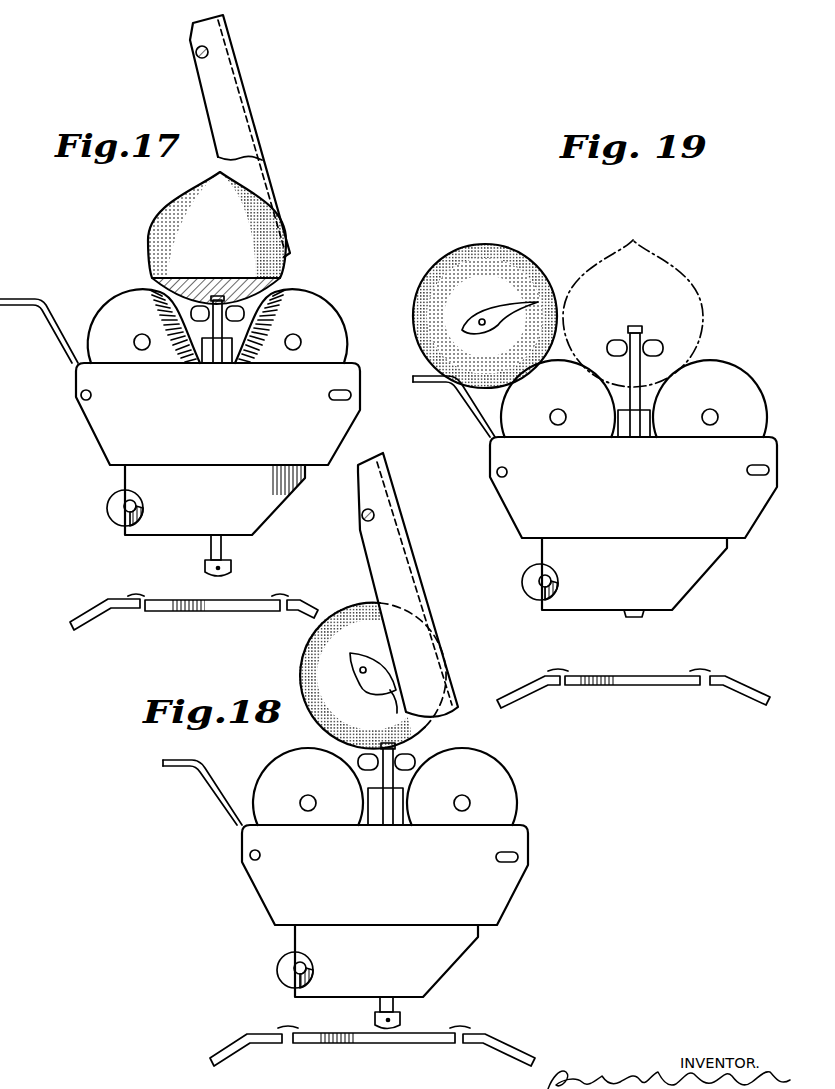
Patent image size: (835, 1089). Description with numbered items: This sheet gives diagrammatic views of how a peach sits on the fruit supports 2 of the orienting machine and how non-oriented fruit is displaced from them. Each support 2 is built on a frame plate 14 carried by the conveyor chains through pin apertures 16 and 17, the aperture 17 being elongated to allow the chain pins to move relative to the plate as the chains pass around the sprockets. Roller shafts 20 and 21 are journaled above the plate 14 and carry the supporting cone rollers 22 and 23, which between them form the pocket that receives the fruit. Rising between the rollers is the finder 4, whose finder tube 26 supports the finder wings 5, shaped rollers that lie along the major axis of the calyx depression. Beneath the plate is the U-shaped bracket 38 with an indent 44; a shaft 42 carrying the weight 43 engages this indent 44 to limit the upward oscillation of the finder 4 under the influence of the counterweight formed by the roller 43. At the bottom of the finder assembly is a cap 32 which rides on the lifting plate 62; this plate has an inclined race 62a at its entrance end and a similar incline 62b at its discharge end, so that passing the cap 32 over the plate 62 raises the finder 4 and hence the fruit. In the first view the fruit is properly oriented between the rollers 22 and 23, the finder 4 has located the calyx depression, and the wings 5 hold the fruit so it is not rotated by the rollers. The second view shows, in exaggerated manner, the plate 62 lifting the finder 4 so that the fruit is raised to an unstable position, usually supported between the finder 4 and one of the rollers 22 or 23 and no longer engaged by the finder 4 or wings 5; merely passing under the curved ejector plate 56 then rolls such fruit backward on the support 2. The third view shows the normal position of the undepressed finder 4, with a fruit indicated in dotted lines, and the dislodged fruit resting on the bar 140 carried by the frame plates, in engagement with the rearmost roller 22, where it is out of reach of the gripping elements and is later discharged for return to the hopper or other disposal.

In FIG. 17, the supports 2 is at (210, 413).
In FIG. 19, the supports 2 is at (624, 479).
In FIG. 18, the supports 2 is at (379, 879).
In FIG. 17, the finder 4 is at (283, 270).
In FIG. 19, the finder 4 is at (638, 325).
In FIG. 18, the finder 4 is at (400, 742).
In FIG. 17, the finder wings 5 is at (212, 298).
In FIG. 19, the finder wings 5 is at (656, 343).
In FIG. 18, the finder wings 5 is at (408, 760).
In FIG. 17, the fruit support frame plates 14 is at (90, 410).
In FIG. 19, the fruit support frame plates 14 is at (518, 500).
In FIG. 18, the fruit support frame plates 14 is at (498, 898).
In FIG. 17, the pin aperture 16 is at (91, 396).
In FIG. 19, the pin aperture 16 is at (508, 472).
In FIG. 18, the pin aperture 16 is at (250, 855).
In FIG. 17, the pin aperture 17 is at (335, 400).
In FIG. 19, the pin aperture 17 is at (752, 468).
In FIG. 18, the pin aperture 17 is at (520, 857).
In FIG. 18, the roller shaft 20 is at (300, 803).
In FIG. 18, the roller shaft 21 is at (470, 803).
In FIG. 17, the supporting cone roller 22 is at (120, 300).
In FIG. 19, the supporting cone roller 22 is at (512, 403).
In FIG. 18, the supporting cone roller 22 is at (297, 777).
In FIG. 17, the supporting cone roller 23 is at (310, 300).
In FIG. 19, the supporting cone roller 23 is at (732, 378).
In FIG. 18, the supporting cone roller 23 is at (475, 777).
In FIG. 17, the finder tube 26 is at (216, 362).
In FIG. 19, the finder tube 26 is at (636, 438).
In FIG. 18, the finder tube 26 is at (386, 826).
In FIG. 17, the cap 32 is at (230, 570).
In FIG. 19, the cap 32 is at (638, 614).
In FIG. 18, the cap 32 is at (400, 1018).
In FIG. 17, the U-shaped bracket 38 is at (325, 432).
In FIG. 19, the U-shaped bracket 38 is at (696, 563).
In FIG. 18, the U-shaped bracket 38 is at (450, 955).
In FIG. 17, the shaft 42 is at (137, 503).
In FIG. 19, the shaft 42 is at (547, 578).
In FIG. 18, the shaft 42 is at (302, 964).
In FIG. 17, the weight 43 is at (107, 506).
In FIG. 19, the weight 43 is at (527, 573).
In FIG. 18, the weight 43 is at (283, 962).
In FIG. 17, the indent 44 is at (145, 508).
In FIG. 19, the indent 44 is at (560, 581).
In FIG. 18, the indent 44 is at (313, 970).
In FIG. 17, the ejector plate 56 is at (270, 165).
In FIG. 18, the ejector plate 56 is at (432, 600).
In FIG. 17, the lifting plate 62 is at (210, 607).
In FIG. 19, the lifting plate 62 is at (634, 676).
In FIG. 18, the lifting plate 62 is at (381, 1043).
In FIG. 17, the inclined race 62a is at (97, 612).
In FIG. 19, the inclined race 62a is at (527, 677).
In FIG. 18, the inclined race 62a is at (232, 1042).
In FIG. 17, the incline 62b is at (310, 605).
In FIG. 19, the incline 62b is at (741, 673).
In FIG. 18, the incline 62b is at (520, 1050).
In FIG. 17, the bar 140 is at (48, 328).
In FIG. 19, the bar 140 is at (443, 383).
In FIG. 18, the bar 140 is at (187, 780).